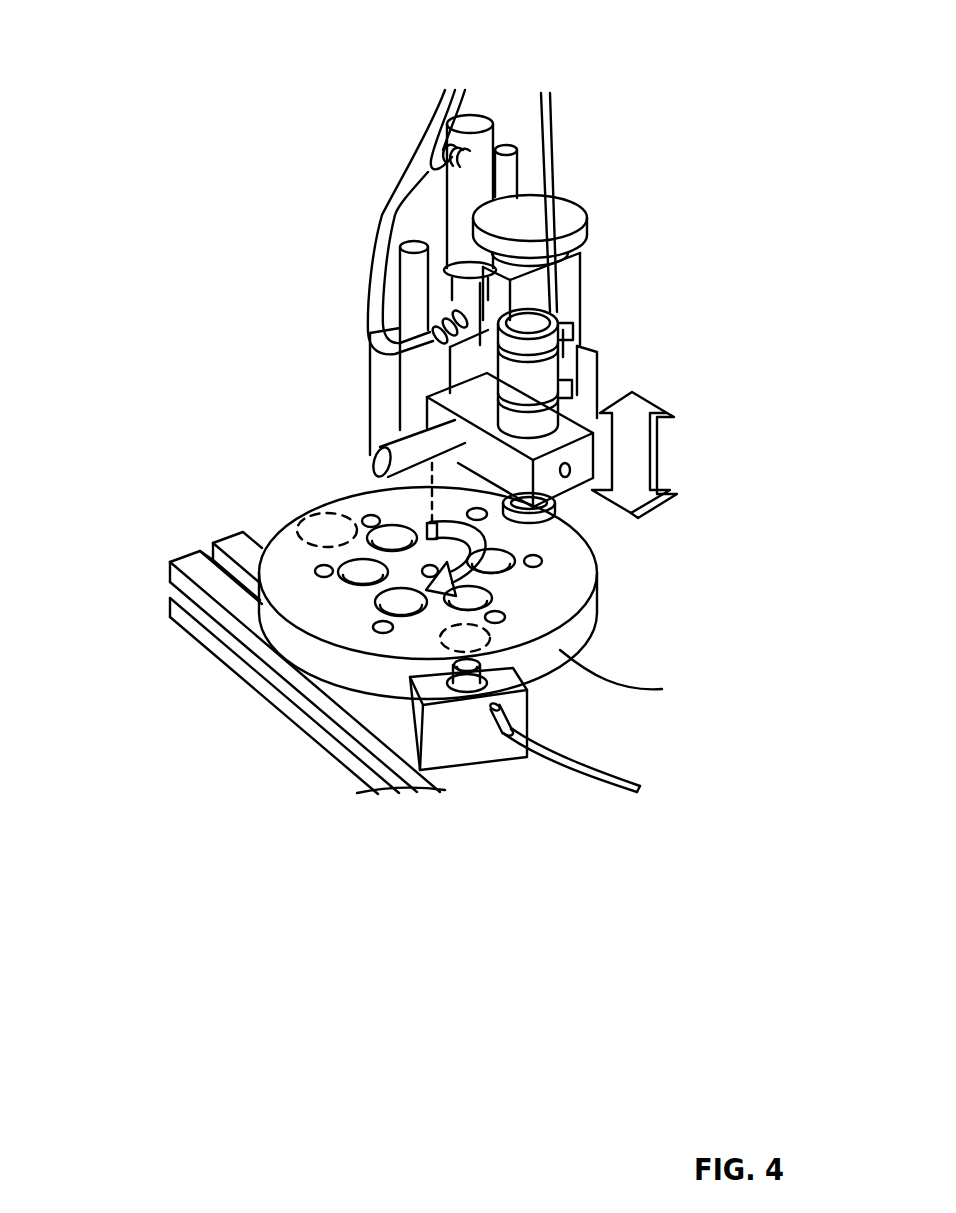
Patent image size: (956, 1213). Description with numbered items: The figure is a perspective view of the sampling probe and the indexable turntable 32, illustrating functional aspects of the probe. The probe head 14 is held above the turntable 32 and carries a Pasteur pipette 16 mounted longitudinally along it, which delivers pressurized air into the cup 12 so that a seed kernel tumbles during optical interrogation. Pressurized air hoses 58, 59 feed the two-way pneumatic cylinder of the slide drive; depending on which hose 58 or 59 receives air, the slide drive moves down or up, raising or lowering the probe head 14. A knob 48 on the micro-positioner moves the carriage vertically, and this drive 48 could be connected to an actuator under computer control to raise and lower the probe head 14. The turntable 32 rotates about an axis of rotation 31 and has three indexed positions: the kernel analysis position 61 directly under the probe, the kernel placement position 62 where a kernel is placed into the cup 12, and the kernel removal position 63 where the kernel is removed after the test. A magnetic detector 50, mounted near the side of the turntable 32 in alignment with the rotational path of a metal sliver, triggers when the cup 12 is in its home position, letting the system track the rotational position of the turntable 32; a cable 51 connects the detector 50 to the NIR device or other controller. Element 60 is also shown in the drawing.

The Pasteur pipette 16 is at (558, 143).
The hose 58 is at (462, 98).
The hose 59 is at (378, 240).
The knob 48 is at (587, 231).
The probe head 14 is at (538, 382).
The cup 12 is at (600, 520).
The kernel placement position 62 is at (332, 523).
The analysis position 61 is at (557, 528).
The turntable 32 is at (567, 643).
The axis of rotation 31 is at (448, 540).
The kernel removal position 63 is at (360, 753).
The kernel removal mount block 60 is at (447, 598).
The magnetic detector 50 is at (495, 708).
The cable 51 is at (520, 722).